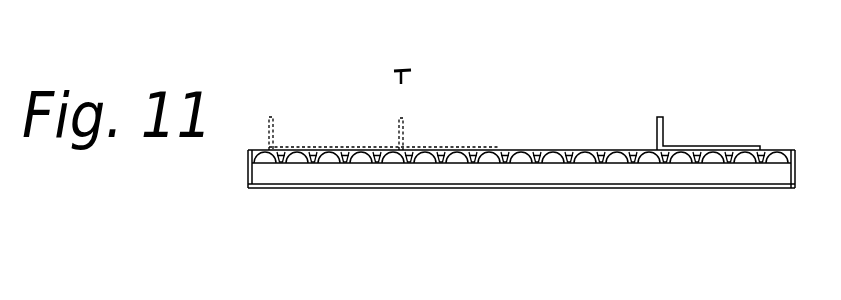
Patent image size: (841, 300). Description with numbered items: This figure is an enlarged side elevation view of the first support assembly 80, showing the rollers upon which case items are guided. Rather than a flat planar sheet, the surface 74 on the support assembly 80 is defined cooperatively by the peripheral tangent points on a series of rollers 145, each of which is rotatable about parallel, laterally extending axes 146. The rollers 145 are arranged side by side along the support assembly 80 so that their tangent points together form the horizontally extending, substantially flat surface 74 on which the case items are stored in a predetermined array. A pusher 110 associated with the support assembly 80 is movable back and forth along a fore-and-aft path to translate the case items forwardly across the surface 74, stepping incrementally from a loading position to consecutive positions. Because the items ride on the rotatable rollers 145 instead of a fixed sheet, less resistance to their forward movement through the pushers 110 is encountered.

The first support assembly 80 is at (571, 97).
The flat surface 74 is at (517, 147).
The pusher 110 is at (280, 117).
The rollers 145 is at (328, 163).
The axes 146 is at (423, 163).